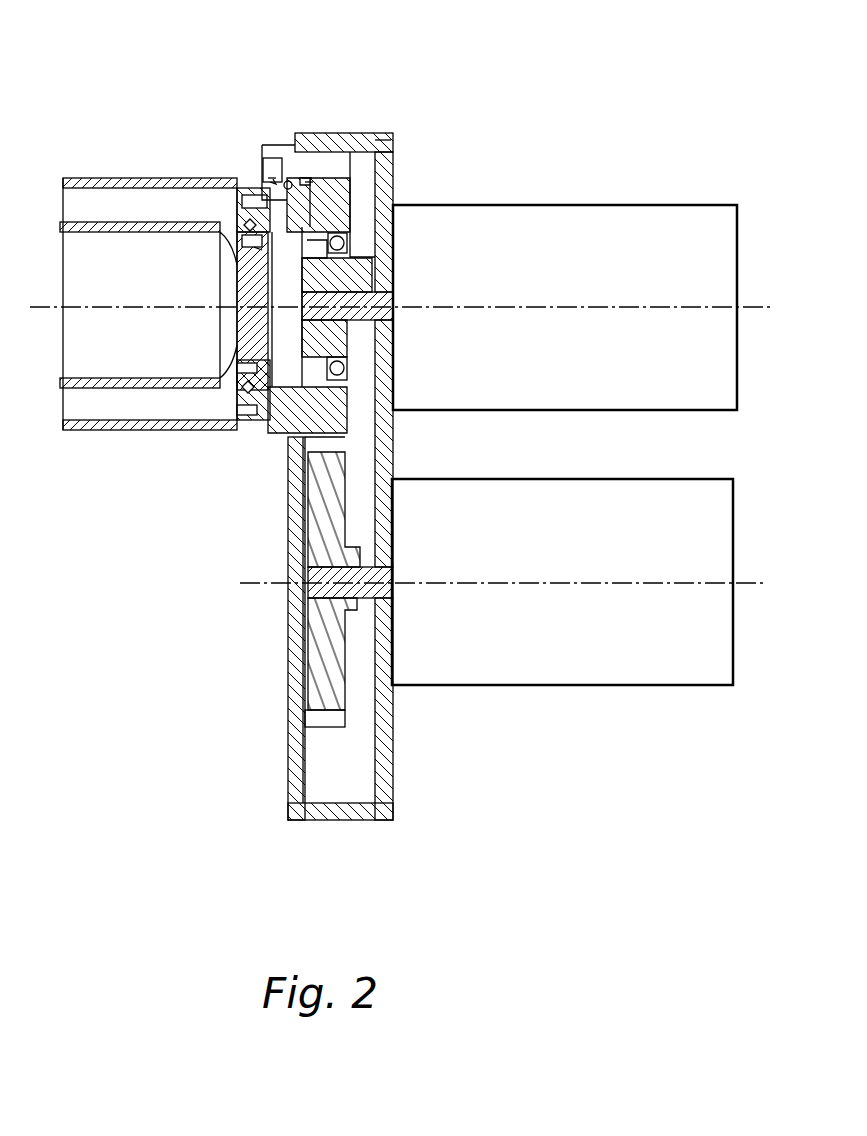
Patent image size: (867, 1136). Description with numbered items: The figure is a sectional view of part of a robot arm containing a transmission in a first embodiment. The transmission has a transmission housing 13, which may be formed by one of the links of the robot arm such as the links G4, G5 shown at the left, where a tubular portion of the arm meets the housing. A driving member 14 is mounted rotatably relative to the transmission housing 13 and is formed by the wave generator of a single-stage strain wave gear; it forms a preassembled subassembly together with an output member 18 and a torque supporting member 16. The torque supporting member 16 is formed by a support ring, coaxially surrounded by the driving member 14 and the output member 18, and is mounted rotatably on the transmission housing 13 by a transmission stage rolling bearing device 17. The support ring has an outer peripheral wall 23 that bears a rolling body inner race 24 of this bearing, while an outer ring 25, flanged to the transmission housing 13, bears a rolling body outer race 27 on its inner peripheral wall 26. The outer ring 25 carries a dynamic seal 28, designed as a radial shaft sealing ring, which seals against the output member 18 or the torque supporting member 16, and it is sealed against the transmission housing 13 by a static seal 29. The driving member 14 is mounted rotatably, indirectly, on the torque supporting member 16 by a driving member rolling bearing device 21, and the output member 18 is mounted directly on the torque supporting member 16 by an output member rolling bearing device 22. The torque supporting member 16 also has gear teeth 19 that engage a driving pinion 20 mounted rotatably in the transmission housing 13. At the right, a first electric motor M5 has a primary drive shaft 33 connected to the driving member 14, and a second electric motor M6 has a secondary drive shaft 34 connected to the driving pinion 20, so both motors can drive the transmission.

The transmission housing 13 is at (333, 815).
The driving member 14 is at (337, 277).
The torque supporting member 16 is at (340, 172).
The transmission stage rolling bearing device 17 is at (310, 182).
The output member 18 is at (247, 293).
The gear teeth 19 is at (385, 150).
The driving pinion 20 is at (327, 665).
The driving member rolling bearing device 21 is at (347, 380).
The output member rolling bearing device 22 is at (253, 223).
The outer peripheral wall 23 is at (243, 188).
The rolling body inner race 24 is at (307, 330).
The outer ring 25 is at (272, 180).
The inner peripheral wall 26 is at (262, 250).
The rolling body outer race 27 is at (288, 181).
The dynamic seal 28 is at (275, 182).
The static seal 29 is at (307, 180).
The primary drive shaft 33 is at (383, 304).
The secondary drive shaft 34 is at (380, 578).
The link G4 is at (73, 428).
The link G5 is at (167, 385).
The first electric motor M5 is at (688, 227).
The second electric motor M6 is at (675, 670).